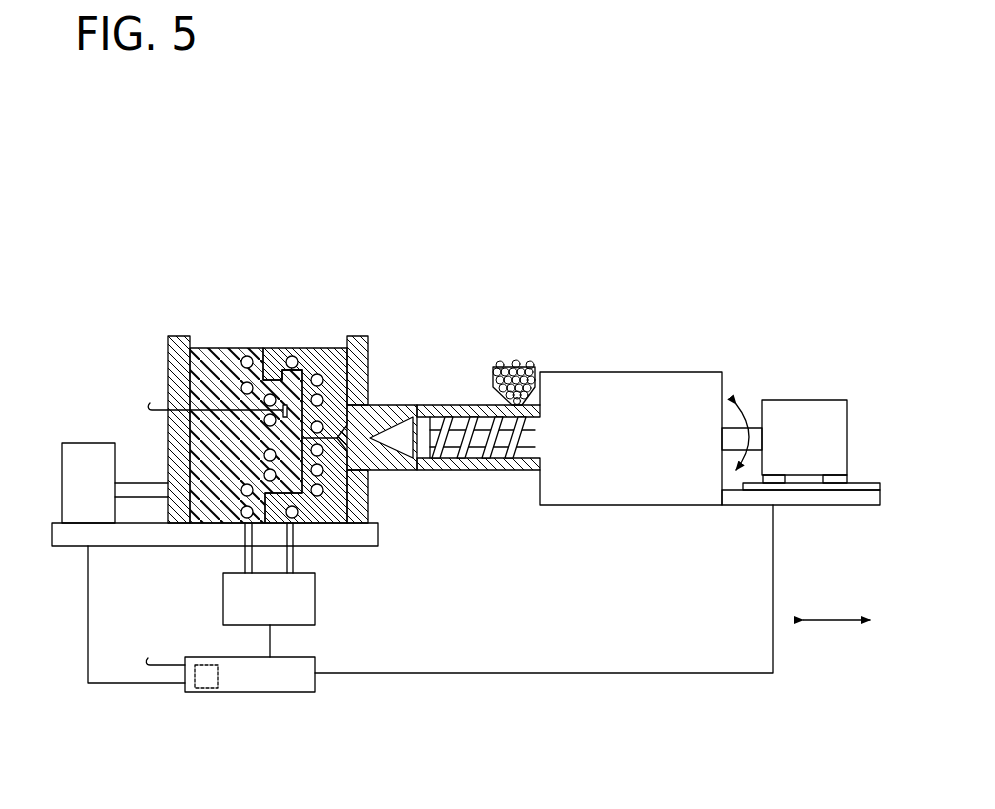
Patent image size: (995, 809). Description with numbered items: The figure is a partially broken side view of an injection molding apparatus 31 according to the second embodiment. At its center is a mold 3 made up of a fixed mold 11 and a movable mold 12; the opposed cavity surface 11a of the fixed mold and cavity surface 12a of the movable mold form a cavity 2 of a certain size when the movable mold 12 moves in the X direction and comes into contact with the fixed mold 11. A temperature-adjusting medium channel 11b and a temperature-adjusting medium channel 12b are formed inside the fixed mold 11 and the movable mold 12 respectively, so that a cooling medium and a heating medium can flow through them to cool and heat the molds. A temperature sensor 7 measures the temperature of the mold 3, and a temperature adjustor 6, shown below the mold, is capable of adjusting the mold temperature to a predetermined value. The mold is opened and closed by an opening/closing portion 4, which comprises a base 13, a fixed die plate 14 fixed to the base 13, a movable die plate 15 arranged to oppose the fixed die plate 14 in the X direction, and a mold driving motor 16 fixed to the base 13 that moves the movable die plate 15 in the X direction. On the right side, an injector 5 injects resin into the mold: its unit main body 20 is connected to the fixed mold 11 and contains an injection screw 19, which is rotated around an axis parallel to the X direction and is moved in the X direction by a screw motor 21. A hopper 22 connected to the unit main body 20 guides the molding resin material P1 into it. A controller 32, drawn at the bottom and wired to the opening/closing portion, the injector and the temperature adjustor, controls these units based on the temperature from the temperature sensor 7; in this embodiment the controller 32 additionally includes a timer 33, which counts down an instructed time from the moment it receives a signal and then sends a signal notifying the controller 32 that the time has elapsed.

The injection molding apparatus 31 is at (98, 178).
The mold 3 is at (353, 212).
The movable mold 12 is at (238, 371).
The cavity surface 12a is at (275, 382).
The temperature-adjusting medium channel 12b is at (245, 350).
The fixed mold 11 is at (306, 371).
The cavity surface 11a is at (284, 350).
The temperature-adjusting medium channel 11b is at (310, 350).
The movable die plate 15 is at (163, 348).
The fixed die plate 14 is at (365, 502).
The cavity 2 is at (335, 390).
The temperature sensor 7 is at (278, 424).
The opening/closing portion 4 is at (93, 435).
The mold driving motor 16 is at (82, 458).
The base 13 is at (128, 546).
The temperature adjustor 6 is at (307, 595).
The controller 32 is at (430, 637).
The timer 33 is at (207, 684).
The injector 5 is at (803, 270).
The unit main body 20 is at (529, 409).
The injection screw 19 is at (493, 452).
The hopper 22 is at (483, 367).
The molding resin material P1 is at (522, 367).
The screw motor 21 is at (792, 400).